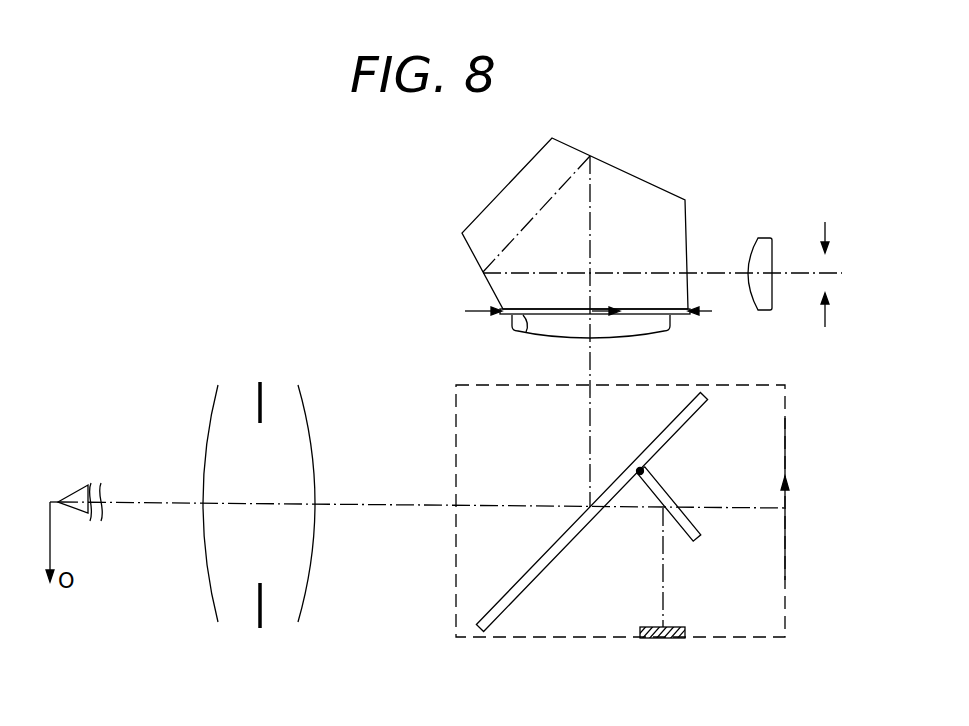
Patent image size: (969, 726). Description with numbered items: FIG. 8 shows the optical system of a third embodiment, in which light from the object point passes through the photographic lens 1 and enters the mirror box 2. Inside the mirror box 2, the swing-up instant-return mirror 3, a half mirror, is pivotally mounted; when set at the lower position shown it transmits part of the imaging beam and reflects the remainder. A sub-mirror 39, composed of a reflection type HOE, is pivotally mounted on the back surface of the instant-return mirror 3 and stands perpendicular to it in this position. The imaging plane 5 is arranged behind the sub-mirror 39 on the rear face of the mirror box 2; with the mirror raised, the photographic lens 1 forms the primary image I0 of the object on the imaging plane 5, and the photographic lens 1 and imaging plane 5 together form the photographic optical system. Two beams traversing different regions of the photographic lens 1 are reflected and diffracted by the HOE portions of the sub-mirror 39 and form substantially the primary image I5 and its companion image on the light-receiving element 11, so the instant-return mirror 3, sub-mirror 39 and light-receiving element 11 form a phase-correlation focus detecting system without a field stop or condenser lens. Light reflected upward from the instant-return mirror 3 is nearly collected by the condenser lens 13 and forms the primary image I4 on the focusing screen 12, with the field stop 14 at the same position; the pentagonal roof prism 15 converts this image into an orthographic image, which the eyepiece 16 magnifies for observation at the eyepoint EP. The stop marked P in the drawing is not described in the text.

The photographic lens 1 is at (232, 622).
The mirror box 2 is at (455, 600).
The instant-return mirror 3 is at (492, 630).
The imaging plane 5 is at (788, 540).
The light-receiving element 11 is at (674, 640).
The focusing screen 12 is at (524, 333).
The condenser lens 13 is at (663, 333).
The field stop 14 is at (477, 307).
The pentagonal roof prism 15 is at (674, 193).
The eyepiece 16 is at (767, 237).
The sub-mirror 39 is at (672, 490).
The pupil / stop P is at (260, 388).
The eyepoint EP is at (842, 274).
The primary image I0 is at (788, 495).
The primary image I4 is at (600, 318).
The primary image I5 is at (666, 625).